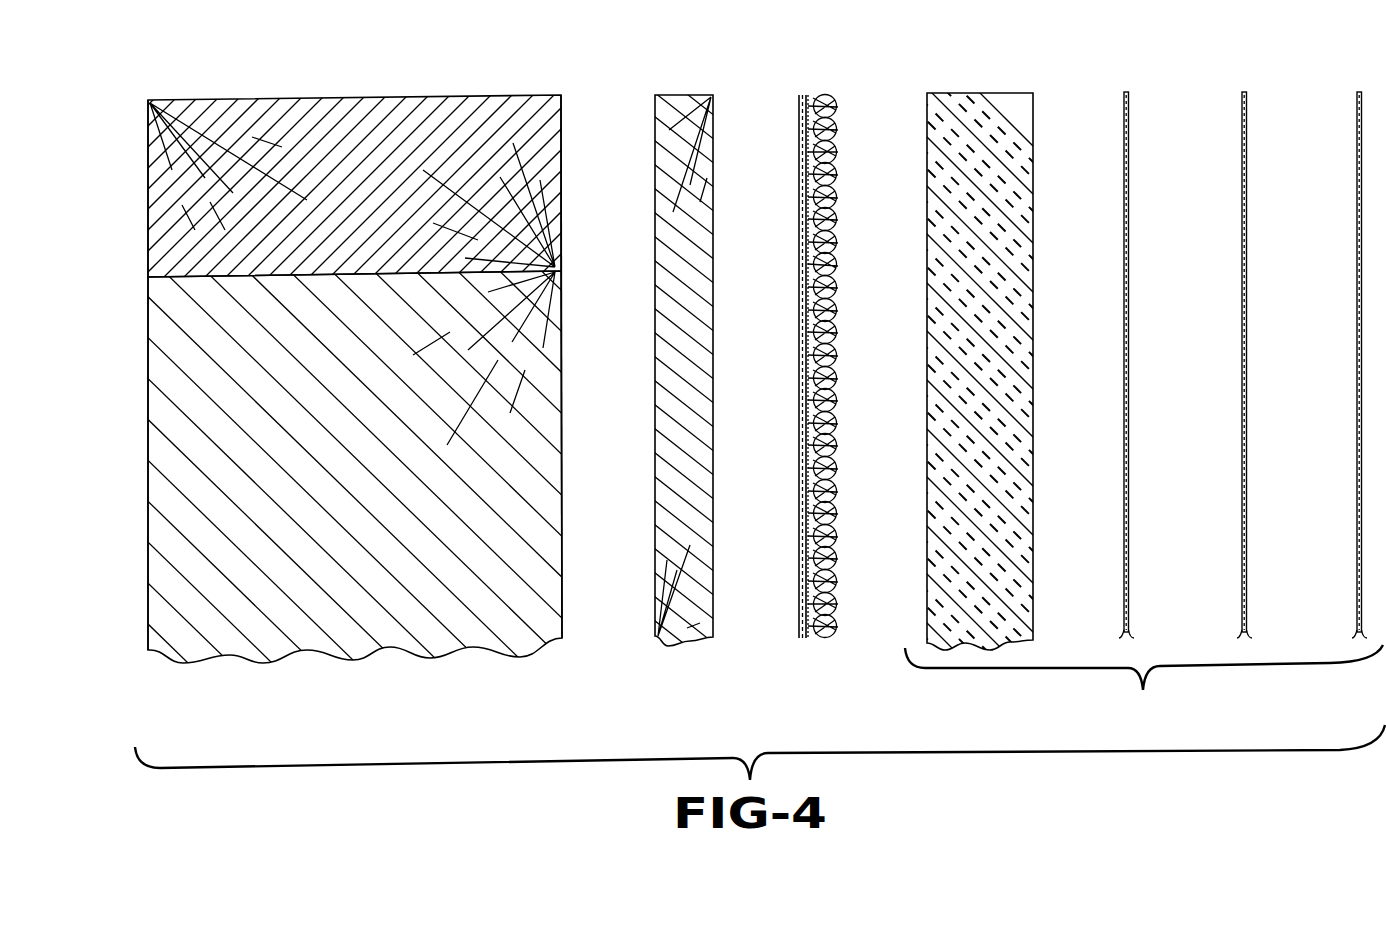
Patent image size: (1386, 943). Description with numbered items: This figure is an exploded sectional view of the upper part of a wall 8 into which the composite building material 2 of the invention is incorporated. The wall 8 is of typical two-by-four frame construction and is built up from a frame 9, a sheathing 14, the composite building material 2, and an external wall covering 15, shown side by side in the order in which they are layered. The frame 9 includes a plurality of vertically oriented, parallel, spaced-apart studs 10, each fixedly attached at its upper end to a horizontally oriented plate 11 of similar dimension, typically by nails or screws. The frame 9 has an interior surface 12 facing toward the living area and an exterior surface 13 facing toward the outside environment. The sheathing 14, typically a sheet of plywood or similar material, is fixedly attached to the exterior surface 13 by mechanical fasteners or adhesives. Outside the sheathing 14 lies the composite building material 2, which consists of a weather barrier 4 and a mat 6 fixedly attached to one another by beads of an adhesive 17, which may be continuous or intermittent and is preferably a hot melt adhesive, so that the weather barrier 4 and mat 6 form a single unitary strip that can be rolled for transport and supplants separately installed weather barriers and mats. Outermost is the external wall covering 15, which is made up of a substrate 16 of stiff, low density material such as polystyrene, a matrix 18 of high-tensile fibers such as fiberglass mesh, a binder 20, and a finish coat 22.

The composite building material 2 is at (814, 334).
The weather barrier 4 is at (803, 128).
The mat 6 is at (840, 183).
The wall 8 is at (604, 790).
The frame 9 is at (491, 368).
The studs 10 is at (328, 608).
The plate 11 is at (318, 128).
The interior surface 12 is at (148, 318).
The exterior surface 13 is at (563, 428).
The sheathing 14 is at (680, 98).
The external wall covering 15 is at (1144, 425).
The substrate 16 is at (987, 98).
The adhesive 17 is at (812, 318).
The matrix 18 is at (1126, 90).
The binder 20 is at (1245, 90).
The finish coat 22 is at (1360, 90).